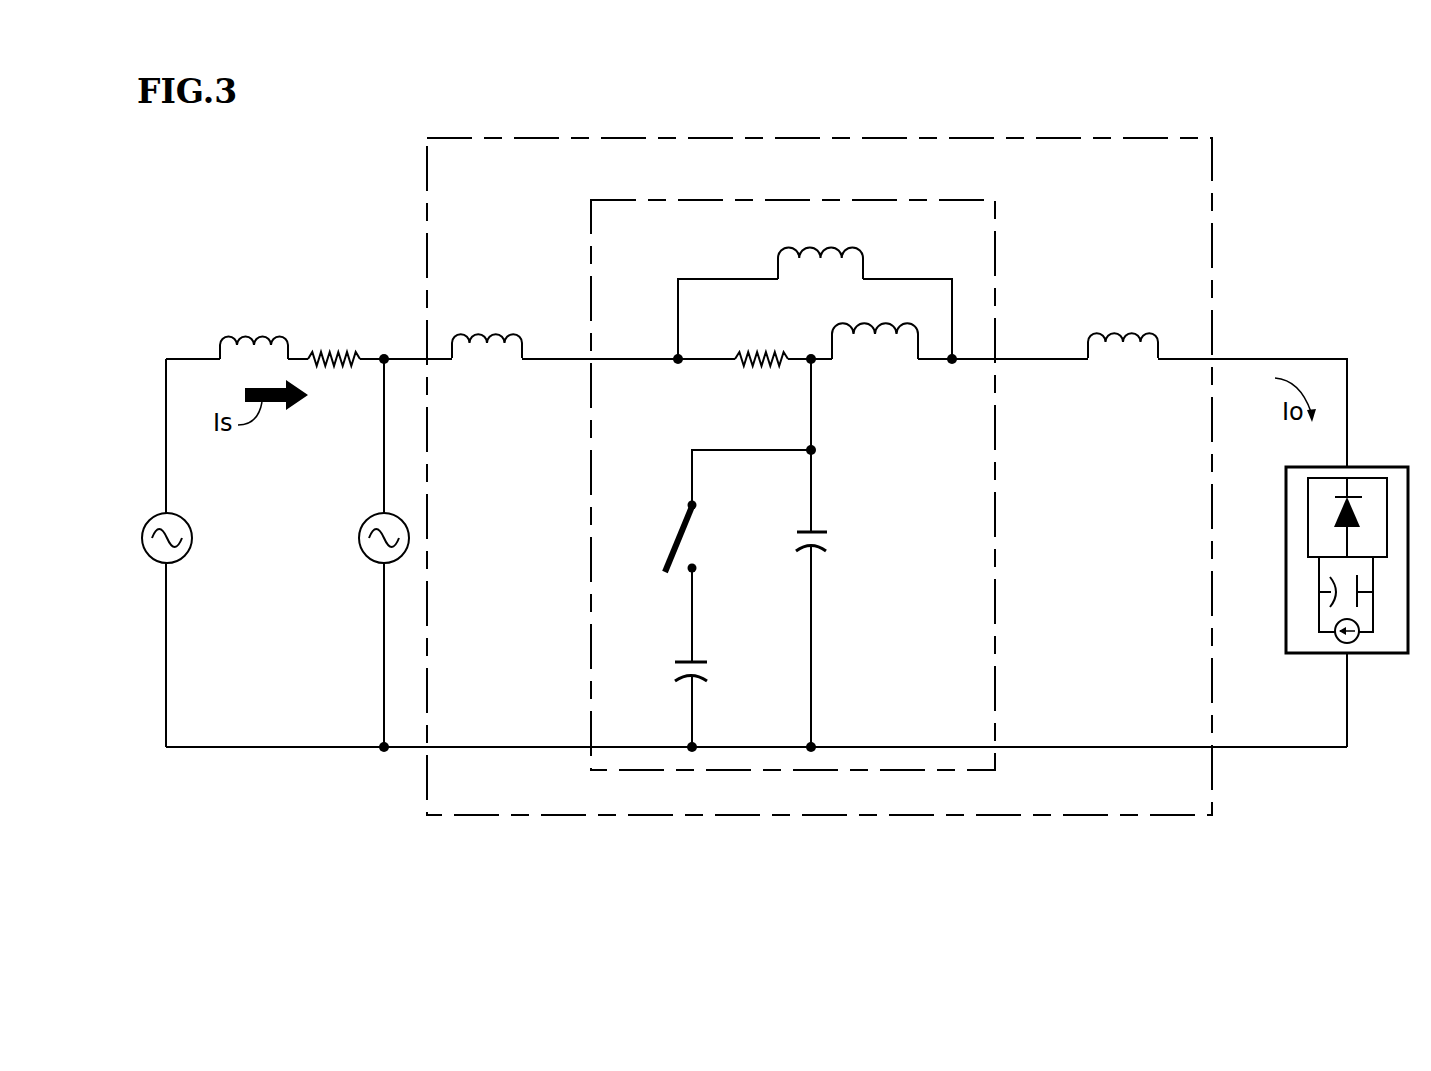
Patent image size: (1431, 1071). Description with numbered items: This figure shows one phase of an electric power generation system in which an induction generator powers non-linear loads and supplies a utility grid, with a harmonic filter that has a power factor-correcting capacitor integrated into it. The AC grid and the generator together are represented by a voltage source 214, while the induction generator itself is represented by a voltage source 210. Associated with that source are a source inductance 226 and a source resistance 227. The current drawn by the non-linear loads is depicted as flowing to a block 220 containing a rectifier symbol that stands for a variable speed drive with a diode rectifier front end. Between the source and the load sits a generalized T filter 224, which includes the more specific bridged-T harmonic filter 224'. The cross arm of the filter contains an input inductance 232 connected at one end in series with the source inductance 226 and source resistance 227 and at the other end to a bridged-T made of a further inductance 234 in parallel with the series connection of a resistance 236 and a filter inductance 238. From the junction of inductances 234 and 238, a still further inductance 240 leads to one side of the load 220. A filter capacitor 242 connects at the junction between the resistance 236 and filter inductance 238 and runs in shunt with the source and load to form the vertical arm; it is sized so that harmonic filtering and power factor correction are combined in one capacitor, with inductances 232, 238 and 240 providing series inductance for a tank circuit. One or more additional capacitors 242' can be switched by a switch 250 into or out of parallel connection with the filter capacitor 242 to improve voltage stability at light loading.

The voltage source 210 is at (362, 518).
The voltage source 214 is at (146, 518).
The non-linear loads block 220 is at (1367, 465).
The generalized T filter 224 is at (819, 432).
The bridged-T harmonic filter 224' is at (860, 468).
The source inductance 226 is at (243, 334).
The source resistance 227 is at (347, 352).
The input inductance 232 is at (511, 332).
The further inductance 234 is at (800, 250).
The resistance 236 is at (758, 366).
The filter inductance 238 is at (858, 325).
The still further inductance 240 is at (1112, 338).
The filter capacitor 242 is at (854, 518).
The additional capacitor 242' is at (733, 645).
The switch 250 is at (680, 532).